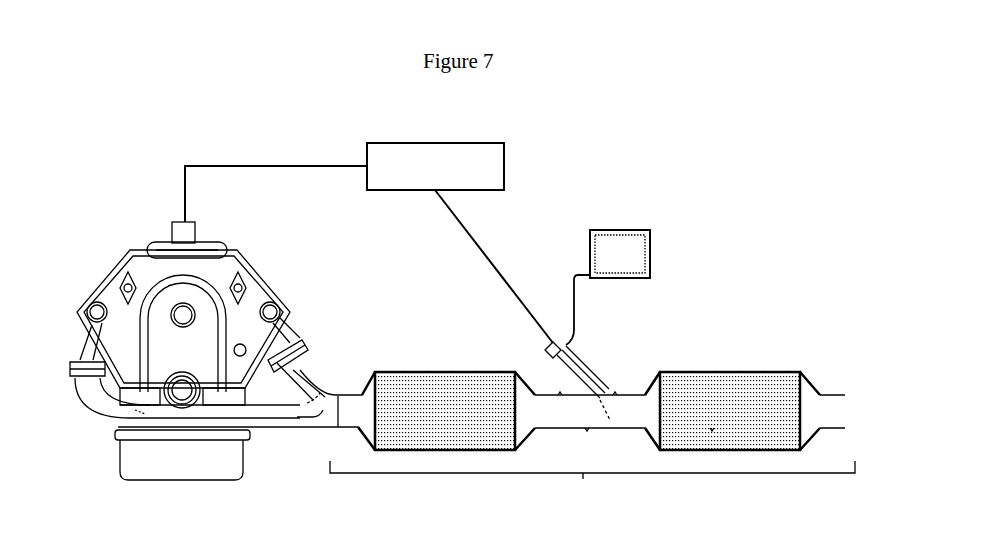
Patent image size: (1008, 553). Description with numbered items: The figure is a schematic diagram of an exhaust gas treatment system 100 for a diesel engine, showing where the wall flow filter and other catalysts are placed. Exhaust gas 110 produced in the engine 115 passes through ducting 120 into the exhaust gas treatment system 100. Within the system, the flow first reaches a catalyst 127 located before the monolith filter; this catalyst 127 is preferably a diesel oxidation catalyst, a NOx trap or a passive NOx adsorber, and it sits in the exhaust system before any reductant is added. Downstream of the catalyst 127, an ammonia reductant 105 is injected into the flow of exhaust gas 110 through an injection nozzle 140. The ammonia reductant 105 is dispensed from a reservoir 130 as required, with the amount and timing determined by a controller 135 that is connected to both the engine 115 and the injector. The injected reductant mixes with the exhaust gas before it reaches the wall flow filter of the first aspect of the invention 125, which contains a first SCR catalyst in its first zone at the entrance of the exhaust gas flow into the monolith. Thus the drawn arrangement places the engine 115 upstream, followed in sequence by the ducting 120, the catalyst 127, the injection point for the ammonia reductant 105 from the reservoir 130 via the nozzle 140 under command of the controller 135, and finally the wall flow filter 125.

The exhaust gas treatment system 100 is at (592, 479).
The ammonia reductant 105 is at (625, 257).
The flow of exhaust gas 110 is at (108, 418).
The engine 115 is at (130, 250).
The ducting 120 is at (252, 435).
The wall flow filter of first aspect of the invention 125 is at (806, 432).
The catalyst before wall flow filter of first aspect of the invention 127 is at (522, 432).
The reservoir 130 is at (625, 230).
The controller 135 is at (432, 143).
The injection nozzle 140 is at (578, 376).